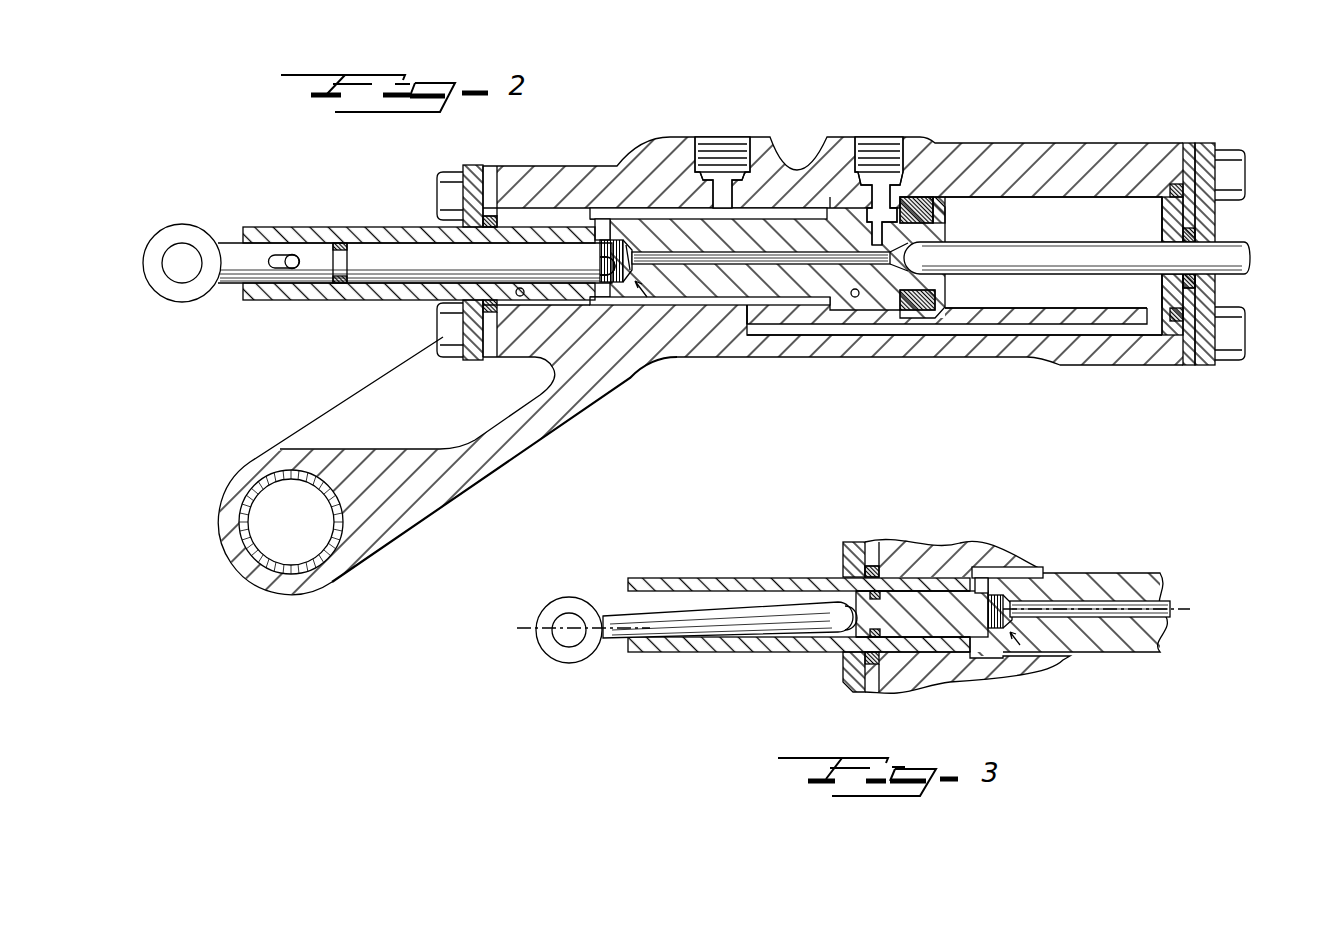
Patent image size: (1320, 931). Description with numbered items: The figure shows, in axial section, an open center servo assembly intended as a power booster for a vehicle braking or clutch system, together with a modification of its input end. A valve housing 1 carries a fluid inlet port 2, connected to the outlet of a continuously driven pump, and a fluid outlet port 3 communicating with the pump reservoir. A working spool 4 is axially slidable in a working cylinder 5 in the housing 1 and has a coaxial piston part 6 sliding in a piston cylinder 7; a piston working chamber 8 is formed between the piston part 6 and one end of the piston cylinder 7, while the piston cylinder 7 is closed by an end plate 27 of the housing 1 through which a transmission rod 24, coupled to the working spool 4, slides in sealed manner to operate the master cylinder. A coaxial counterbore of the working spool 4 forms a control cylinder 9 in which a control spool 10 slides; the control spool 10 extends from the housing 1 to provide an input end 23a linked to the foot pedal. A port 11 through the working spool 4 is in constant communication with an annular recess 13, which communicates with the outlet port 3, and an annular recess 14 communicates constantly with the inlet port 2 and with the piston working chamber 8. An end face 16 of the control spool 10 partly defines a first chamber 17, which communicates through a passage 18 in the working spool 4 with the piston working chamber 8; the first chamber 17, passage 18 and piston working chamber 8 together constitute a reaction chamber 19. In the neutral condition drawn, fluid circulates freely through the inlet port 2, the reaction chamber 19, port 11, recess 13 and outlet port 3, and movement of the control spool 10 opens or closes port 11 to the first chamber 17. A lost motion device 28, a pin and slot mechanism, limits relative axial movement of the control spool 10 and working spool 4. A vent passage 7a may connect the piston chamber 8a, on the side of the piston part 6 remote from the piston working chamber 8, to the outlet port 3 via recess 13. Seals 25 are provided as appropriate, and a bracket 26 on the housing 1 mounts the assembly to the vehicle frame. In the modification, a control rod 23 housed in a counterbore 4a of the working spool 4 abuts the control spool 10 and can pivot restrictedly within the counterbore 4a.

In FIG. 2, the valve housing 1 is at (540, 178).
In FIG. 3, the valve housing 1 is at (845, 553).
In FIG. 2, the fluid inlet port 2 is at (887, 152).
In FIG. 2, the fluid outlet port 3 is at (730, 158).
In FIG. 2, the working spool 4 is at (718, 292).
In FIG. 3, the working spool 4 is at (915, 652).
In FIG. 3, the counterbore 4a is at (656, 598).
In FIG. 2, the working cylinder 5 is at (856, 298).
In FIG. 2, the piston part 6 is at (941, 209).
In FIG. 2, the piston cylinder 7 is at (992, 311).
In FIG. 2, the vent passage 7a is at (1063, 327).
In FIG. 2, the piston working chamber 8 is at (905, 200).
In FIG. 2, the piston chamber 8a is at (1065, 215).
In FIG. 2, the control cylinder 9 is at (490, 278).
In FIG. 3, the control cylinder 9 is at (955, 628).
In FIG. 2, the control spool 10 is at (565, 250).
In FIG. 3, the control spool 10 is at (935, 608).
In FIG. 2, the port 11 is at (603, 228).
In FIG. 3, the port 11 is at (982, 585).
In FIG. 2, the annular recess 13 is at (775, 300).
In FIG. 2, the annular recess 14 is at (880, 305).
In FIG. 2, the end face 16 is at (597, 273).
In FIG. 3, the end face 16 is at (1030, 592).
In FIG. 2, the first chamber 17 is at (613, 282).
In FIG. 3, the first chamber 17 is at (990, 628).
In FIG. 2, the passage 18 is at (690, 266).
In FIG. 3, the passage 18 is at (1122, 622).
In FIG. 2, the reaction chamber 19 is at (636, 290).
In FIG. 3, the reaction chamber 19 is at (1012, 633).
In FIG. 3, the control rod 23 is at (605, 622).
In FIG. 2, the input end 23a is at (185, 288).
In FIG. 2, the transmission rod 24 is at (1225, 246).
In FIG. 2, the seals 25 is at (1230, 274).
In FIG. 3, the seals 25 is at (882, 588).
In FIG. 2, the bracket 26 is at (410, 507).
In FIG. 2, the end plate 27 is at (1203, 362).
In FIG. 2, the lost motion device 28 is at (293, 255).